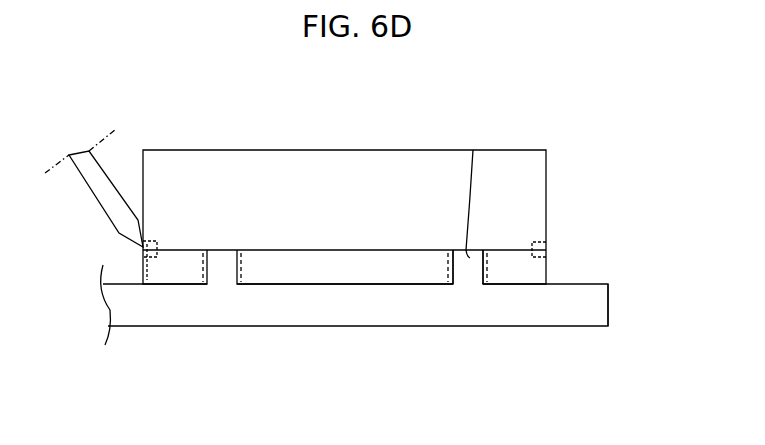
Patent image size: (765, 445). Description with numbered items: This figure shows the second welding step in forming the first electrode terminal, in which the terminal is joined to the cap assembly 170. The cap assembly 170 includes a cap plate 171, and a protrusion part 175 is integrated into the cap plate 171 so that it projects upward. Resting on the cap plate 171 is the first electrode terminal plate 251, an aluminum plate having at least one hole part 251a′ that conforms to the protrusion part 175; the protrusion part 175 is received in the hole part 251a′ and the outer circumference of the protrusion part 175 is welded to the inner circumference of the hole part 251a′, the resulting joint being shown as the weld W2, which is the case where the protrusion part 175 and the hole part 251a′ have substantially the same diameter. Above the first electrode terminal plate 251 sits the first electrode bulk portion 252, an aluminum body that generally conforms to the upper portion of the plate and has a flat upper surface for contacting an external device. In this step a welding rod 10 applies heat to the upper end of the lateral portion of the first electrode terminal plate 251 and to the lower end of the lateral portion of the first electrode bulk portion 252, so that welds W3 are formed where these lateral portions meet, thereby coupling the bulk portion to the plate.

The welding rod 10 is at (93, 190).
The protrusion part 175 is at (473, 150).
The first electrode bulk portion 252 is at (540, 190).
The first electrode terminal plate 251 is at (538, 269).
The hole part 251a′ is at (452, 273).
The weld W2 is at (485, 284).
The welds W3 is at (548, 242).
The cap assembly 170 is at (612, 284).
The cap plate 171 is at (602, 307).